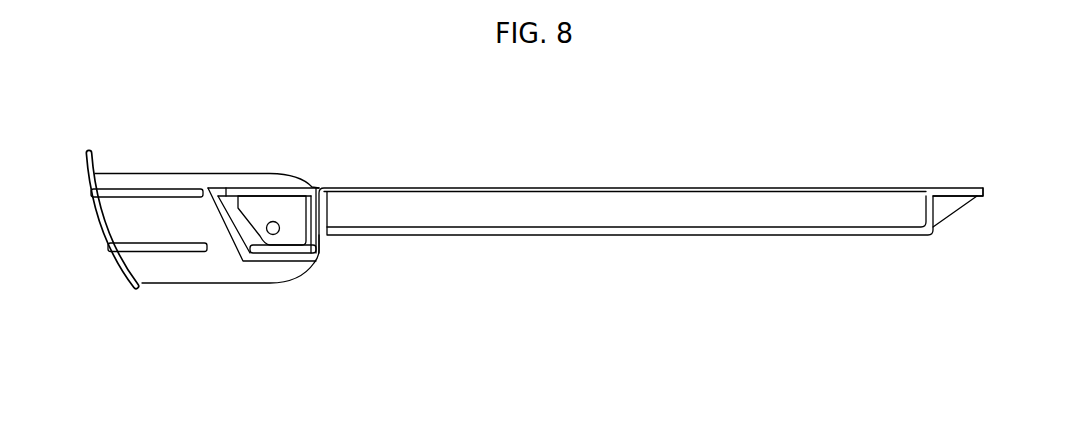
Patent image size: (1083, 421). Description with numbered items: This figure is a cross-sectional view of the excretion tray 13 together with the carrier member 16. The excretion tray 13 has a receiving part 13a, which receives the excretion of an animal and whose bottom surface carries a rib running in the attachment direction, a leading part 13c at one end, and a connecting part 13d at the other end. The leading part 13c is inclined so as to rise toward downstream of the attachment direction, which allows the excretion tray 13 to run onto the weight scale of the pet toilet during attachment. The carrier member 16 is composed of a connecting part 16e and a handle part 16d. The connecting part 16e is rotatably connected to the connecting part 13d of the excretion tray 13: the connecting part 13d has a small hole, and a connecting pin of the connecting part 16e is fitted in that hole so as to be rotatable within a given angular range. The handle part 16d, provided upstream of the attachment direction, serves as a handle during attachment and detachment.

The excretion tray 13 is at (651, 230).
The receiving part 13a is at (578, 213).
The leading part 13c is at (947, 197).
The connecting part 13d is at (277, 208).
The carrier member 16 is at (193, 240).
The handle part 16d is at (128, 285).
The connecting part 16e is at (290, 253).